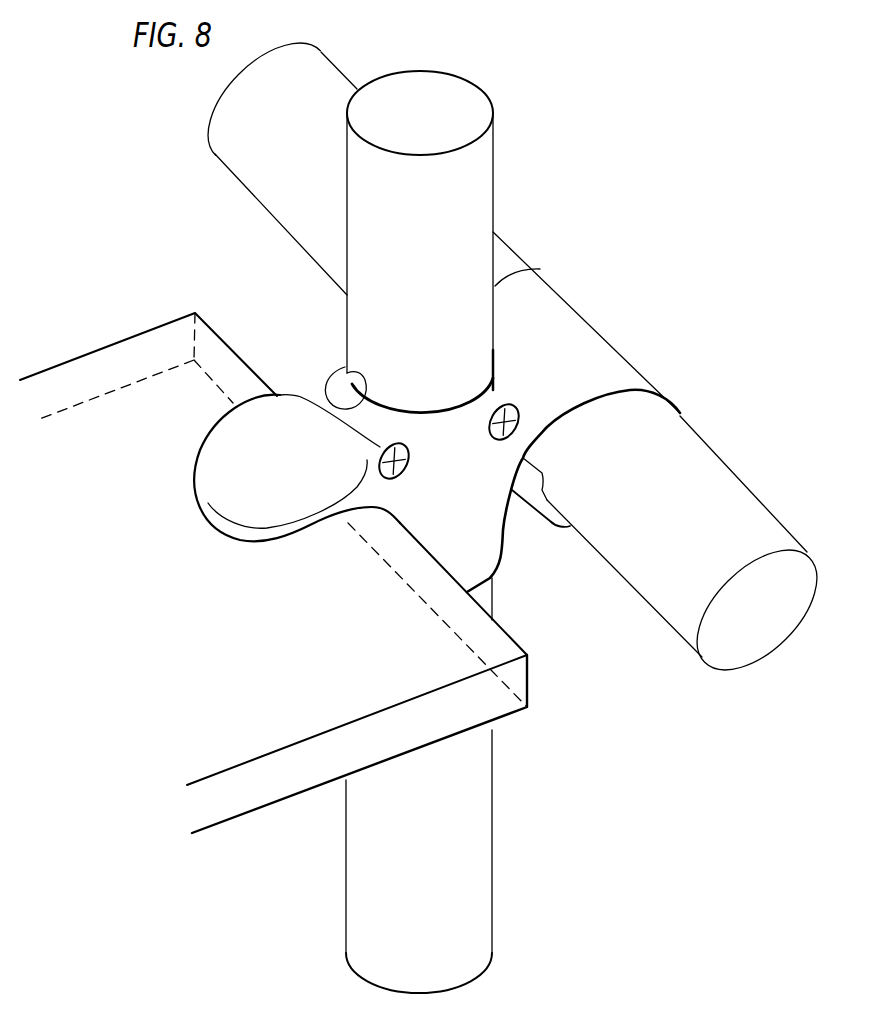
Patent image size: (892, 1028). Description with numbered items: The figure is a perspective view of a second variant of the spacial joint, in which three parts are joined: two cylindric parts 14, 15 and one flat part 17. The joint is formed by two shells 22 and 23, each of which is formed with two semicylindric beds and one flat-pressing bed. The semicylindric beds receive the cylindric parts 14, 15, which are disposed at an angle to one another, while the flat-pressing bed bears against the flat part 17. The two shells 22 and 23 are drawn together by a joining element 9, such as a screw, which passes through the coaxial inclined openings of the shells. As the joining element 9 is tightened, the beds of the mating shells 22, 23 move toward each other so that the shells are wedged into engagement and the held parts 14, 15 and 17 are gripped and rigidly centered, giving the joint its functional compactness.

The joining element 9 is at (303, 398).
The cylindric part 14 is at (460, 188).
The cylindric part 15 is at (708, 492).
The flat part 17 is at (440, 675).
The shell 22 is at (603, 367).
The shell 23 is at (533, 503).